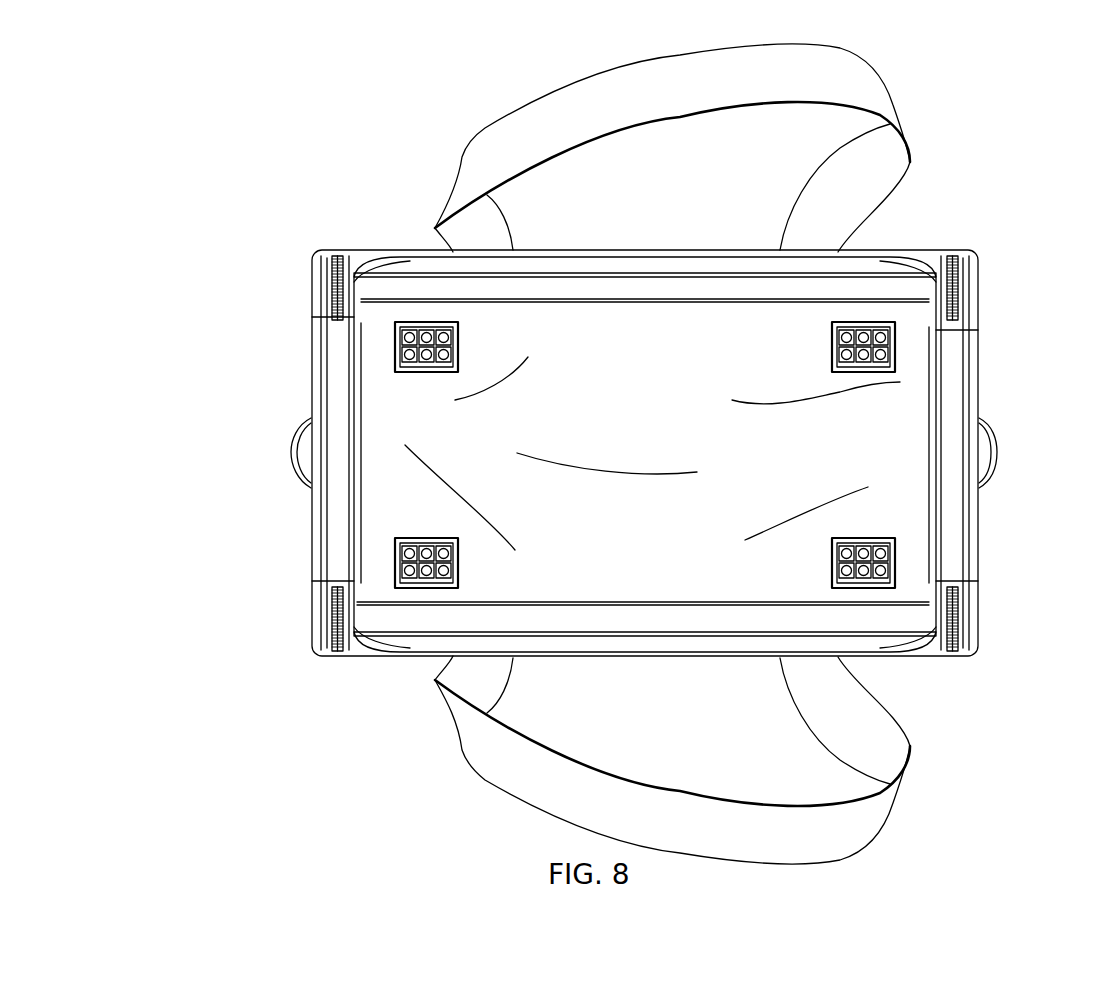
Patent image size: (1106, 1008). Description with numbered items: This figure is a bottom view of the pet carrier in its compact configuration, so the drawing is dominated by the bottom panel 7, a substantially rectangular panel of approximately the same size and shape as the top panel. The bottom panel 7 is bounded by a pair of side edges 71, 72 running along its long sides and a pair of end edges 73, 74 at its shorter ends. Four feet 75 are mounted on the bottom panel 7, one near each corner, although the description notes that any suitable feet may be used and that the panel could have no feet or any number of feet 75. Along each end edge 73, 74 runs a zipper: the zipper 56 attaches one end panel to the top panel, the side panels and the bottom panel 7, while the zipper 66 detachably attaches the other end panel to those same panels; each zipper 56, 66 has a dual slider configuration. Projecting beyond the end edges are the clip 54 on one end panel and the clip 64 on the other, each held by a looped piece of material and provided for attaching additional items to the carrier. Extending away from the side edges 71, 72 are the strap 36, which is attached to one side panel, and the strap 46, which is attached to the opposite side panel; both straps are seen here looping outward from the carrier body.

The bottom panel 7 is at (877, 417).
The strap 36 is at (880, 86).
The strap 46 is at (483, 755).
The clip 54 is at (995, 450).
The zipper 56 is at (951, 254).
The clip 64 is at (290, 447).
The zipper 66 is at (340, 257).
The side edge 71 is at (897, 268).
The side edge 72 is at (877, 632).
The end edge 73 is at (940, 505).
The end edge 74 is at (335, 505).
The feet 75 is at (397, 330).